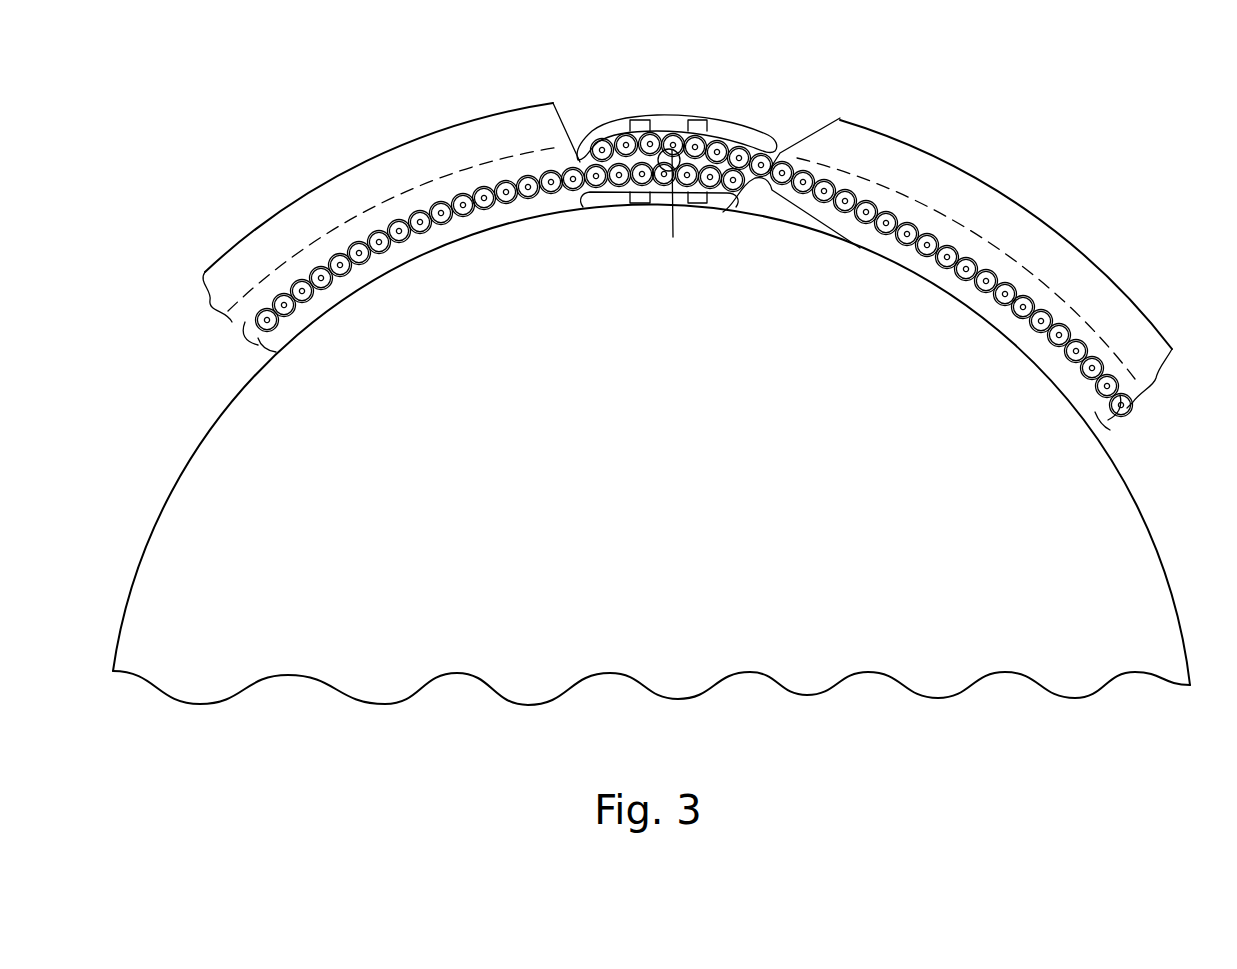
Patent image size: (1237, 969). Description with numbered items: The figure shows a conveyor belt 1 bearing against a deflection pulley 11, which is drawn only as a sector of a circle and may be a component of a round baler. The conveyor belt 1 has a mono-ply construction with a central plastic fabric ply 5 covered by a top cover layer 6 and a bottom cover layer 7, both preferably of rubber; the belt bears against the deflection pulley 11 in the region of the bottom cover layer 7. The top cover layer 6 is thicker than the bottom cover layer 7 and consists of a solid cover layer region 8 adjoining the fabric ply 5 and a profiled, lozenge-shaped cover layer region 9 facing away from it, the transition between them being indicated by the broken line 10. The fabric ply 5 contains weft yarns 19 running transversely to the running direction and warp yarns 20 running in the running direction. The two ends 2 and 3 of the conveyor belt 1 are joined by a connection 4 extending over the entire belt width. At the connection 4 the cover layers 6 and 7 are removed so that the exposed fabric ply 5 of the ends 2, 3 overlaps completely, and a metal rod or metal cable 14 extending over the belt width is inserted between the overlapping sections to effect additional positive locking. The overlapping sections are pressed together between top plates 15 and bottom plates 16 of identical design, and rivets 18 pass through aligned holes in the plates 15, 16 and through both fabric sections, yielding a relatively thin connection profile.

The conveyor belt 1 is at (240, 196).
The end 2 is at (581, 136).
The end 3 is at (783, 141).
The connection 4 is at (721, 94).
The fabric ply 5 is at (413, 210).
The top cover layer 6 is at (192, 320).
The bottom cover layer 7 is at (270, 353).
The cover layer region 8 is at (242, 322).
The cover layer region 9 is at (223, 272).
The broken line 10 is at (360, 207).
The deflection pulley 11 is at (148, 588).
The metal rod or metal cable 14 is at (667, 72).
The top plates 15 is at (733, 132).
The bottom plates 16 is at (602, 205).
The rivets 18 is at (638, 120).
The weft yarns 19 is at (324, 284).
The warp yarns 20 is at (388, 258).